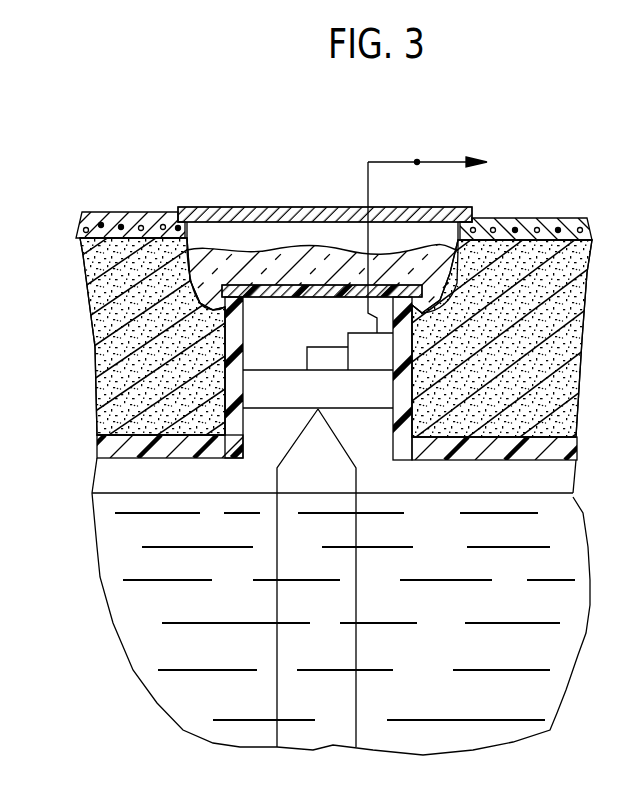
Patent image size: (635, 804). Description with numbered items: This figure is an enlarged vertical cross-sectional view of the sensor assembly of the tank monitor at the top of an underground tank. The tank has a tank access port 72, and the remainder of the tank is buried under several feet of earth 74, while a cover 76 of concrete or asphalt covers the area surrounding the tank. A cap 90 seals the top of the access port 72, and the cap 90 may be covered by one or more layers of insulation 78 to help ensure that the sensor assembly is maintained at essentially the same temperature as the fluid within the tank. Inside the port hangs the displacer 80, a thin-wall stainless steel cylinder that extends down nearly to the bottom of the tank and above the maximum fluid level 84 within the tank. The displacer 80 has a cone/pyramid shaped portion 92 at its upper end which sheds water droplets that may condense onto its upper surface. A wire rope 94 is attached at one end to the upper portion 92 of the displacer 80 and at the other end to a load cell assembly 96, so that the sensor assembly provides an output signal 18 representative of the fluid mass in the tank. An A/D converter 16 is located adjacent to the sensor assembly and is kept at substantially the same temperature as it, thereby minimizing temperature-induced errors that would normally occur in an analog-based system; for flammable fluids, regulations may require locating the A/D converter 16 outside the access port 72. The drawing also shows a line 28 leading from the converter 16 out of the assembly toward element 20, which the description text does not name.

The A/D converter 16 is at (382, 367).
The output signal 18 is at (325, 347).
The controller 20 is at (573, 177).
The cable 28 is at (417, 162).
The tank access port 72 is at (303, 304).
The earth 74 is at (115, 250).
The cover 76 is at (158, 218).
The insulation 78 is at (222, 252).
The displacer 80 is at (329, 480).
The maximum fluid level 84 is at (457, 493).
The cap 90 is at (308, 277).
The cone/pyramid shaped portion 92 is at (302, 433).
The wire rope 94 is at (320, 412).
The load cell assembly 96 is at (329, 399).